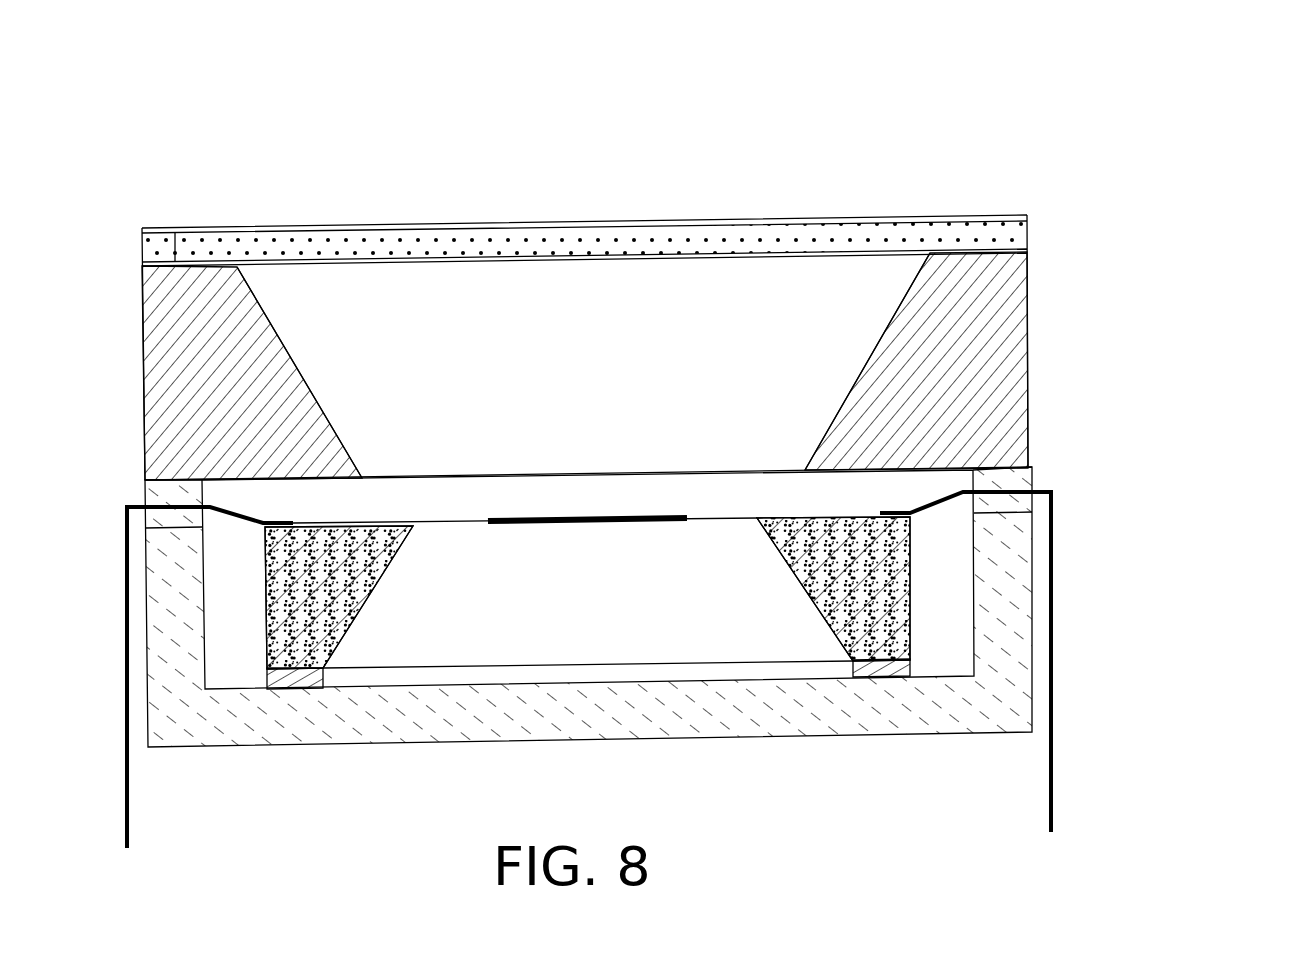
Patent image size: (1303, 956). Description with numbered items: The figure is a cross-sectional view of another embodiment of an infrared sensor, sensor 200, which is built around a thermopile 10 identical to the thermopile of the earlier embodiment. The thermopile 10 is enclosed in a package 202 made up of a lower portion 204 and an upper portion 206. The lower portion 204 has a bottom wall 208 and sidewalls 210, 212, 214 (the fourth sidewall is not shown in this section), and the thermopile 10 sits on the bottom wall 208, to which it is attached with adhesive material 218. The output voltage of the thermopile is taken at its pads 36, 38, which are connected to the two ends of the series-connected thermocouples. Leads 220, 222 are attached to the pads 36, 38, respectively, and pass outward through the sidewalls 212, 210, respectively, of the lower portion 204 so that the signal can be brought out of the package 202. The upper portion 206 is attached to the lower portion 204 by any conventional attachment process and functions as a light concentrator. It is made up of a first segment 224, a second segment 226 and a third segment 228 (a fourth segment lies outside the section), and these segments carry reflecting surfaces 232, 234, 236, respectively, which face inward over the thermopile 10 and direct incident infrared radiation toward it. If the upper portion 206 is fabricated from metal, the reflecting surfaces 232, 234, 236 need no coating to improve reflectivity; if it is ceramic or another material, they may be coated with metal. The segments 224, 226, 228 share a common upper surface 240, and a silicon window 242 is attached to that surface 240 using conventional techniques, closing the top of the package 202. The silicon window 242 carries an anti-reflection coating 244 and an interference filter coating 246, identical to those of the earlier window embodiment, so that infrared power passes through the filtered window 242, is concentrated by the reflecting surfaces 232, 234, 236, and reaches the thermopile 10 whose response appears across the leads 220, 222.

The sensor 200 is at (1185, 148).
The package 202 is at (1055, 432).
The lower portion 204 is at (1035, 678).
The upper portion 206 is at (1032, 315).
The bottom wall 208 is at (760, 742).
The sidewall 210 is at (148, 580).
The sidewall 212 is at (1020, 573).
The sidewall 214 is at (566, 508).
The adhesive material 218 is at (267, 673).
The lead 220 is at (1053, 800).
The lead 222 is at (128, 775).
The first segment 224 is at (998, 383).
The second segment 226 is at (740, 303).
The third segment 228 is at (167, 425).
The reflecting surface 232 is at (900, 285).
The reflecting surface 234 is at (622, 292).
The reflecting surface 236 is at (262, 302).
The upper surface 240 is at (178, 232).
The silicon window 242 is at (373, 227).
The anti-reflection coating 244 is at (578, 220).
The interference filter coating 246 is at (423, 263).
The thermopile 10 is at (913, 592).
The pad 36 is at (895, 513).
The pad 38 is at (283, 522).